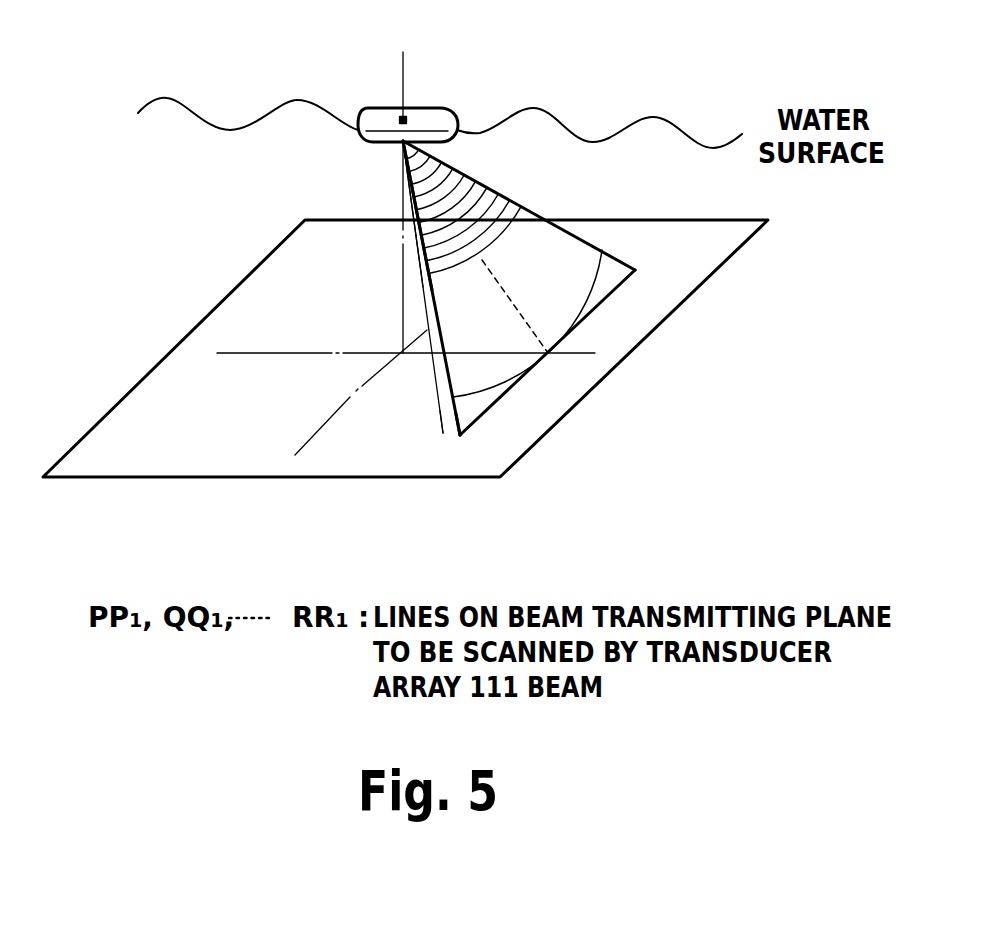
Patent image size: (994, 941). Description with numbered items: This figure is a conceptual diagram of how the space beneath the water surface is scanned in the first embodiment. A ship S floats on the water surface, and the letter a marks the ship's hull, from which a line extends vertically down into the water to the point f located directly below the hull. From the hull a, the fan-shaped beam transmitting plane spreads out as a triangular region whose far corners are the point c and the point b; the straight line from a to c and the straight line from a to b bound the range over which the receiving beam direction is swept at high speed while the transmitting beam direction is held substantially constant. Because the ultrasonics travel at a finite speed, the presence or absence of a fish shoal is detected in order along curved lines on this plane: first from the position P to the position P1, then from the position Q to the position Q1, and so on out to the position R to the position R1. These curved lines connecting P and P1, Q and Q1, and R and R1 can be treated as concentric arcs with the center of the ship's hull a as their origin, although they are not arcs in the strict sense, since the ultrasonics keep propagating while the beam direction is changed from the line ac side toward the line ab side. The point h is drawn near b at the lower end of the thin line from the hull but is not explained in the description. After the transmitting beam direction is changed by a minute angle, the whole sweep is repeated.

The ship S is at (437, 103).
The ship's hull a is at (395, 143).
The position P is at (410, 145).
The position P1 is at (400, 147).
The position Q is at (410, 147).
The position Q1 is at (405, 147).
The position R is at (519, 205).
The position R1 is at (527, 323).
The point c is at (558, 347).
The point vertically below the ship's hull f is at (406, 298).
The point h is at (431, 436).
The point b is at (472, 437).